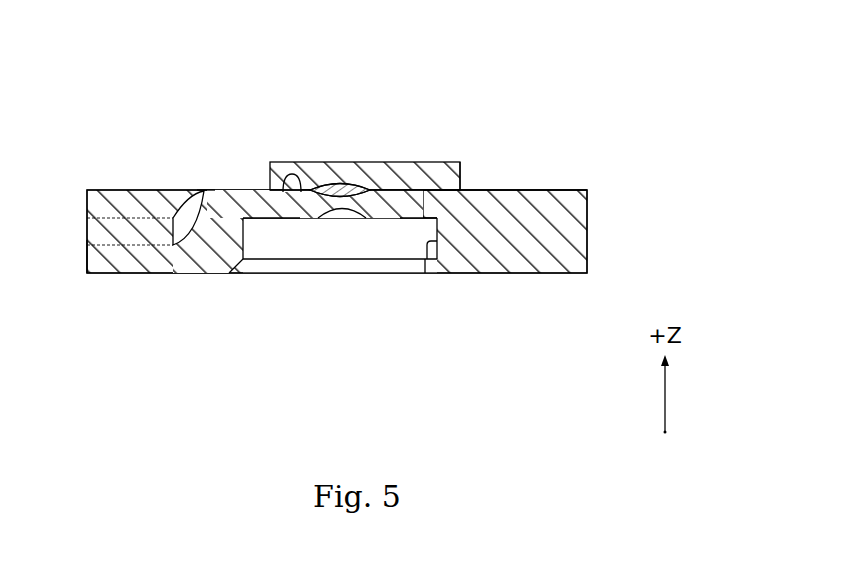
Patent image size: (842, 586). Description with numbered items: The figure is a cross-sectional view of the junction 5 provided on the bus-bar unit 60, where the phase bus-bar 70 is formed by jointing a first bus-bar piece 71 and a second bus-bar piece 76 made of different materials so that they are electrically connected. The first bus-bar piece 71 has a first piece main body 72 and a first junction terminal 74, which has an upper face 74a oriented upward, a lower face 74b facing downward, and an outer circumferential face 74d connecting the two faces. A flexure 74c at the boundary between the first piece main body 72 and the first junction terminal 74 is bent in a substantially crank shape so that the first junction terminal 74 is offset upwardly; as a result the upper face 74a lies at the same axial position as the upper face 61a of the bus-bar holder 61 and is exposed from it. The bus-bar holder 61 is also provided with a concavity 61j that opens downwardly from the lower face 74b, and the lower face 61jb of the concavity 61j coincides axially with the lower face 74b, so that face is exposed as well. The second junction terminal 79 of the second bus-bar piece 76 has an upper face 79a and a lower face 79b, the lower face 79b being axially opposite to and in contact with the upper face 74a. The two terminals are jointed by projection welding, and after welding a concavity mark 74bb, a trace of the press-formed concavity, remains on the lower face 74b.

The junction 5 is at (345, 184).
The optical module 60 is at (376, 199).
The bus-bar holder 61 is at (376, 250).
The upper face of the bus-bar holder 61a is at (576, 188).
The concavity 61j is at (437, 246).
The lower face of the concavity 61jb is at (428, 252).
The phase bus-bar 70 is at (212, 108).
The first bus-bar piece 71 is at (203, 183).
The first piece main body 72 is at (117, 250).
The first junction terminal 74 is at (383, 280).
The upper face 74a is at (298, 193).
The lower face 74b is at (288, 218).
The concavity mark 74bb is at (343, 216).
The flexure 74c is at (199, 225).
The outer circumferential face 74d is at (433, 226).
The second bus-bar piece 76 is at (240, 106).
The second junction terminal 79 is at (407, 107).
The upper face of the second junction terminal 79a is at (376, 190).
The lower face of the second junction terminal 79b is at (412, 192).